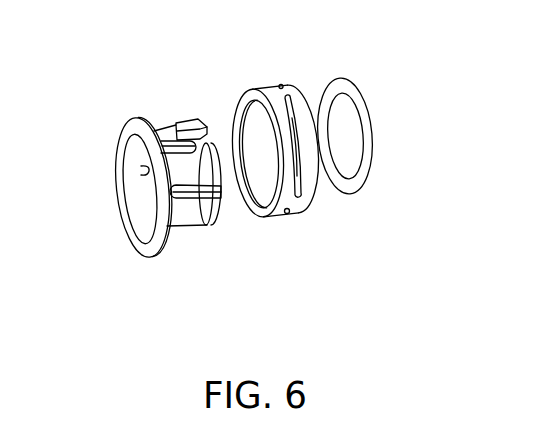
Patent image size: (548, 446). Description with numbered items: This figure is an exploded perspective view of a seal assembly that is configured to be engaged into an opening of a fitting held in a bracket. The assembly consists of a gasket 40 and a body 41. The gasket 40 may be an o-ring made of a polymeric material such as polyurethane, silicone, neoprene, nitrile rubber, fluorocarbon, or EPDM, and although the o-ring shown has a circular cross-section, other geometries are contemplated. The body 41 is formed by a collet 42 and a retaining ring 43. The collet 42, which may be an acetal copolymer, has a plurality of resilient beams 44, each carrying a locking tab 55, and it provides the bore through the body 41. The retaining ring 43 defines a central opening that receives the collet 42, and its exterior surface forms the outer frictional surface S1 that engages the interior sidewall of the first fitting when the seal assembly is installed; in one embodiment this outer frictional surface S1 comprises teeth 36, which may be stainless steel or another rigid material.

The teeth 36 is at (298, 176).
The gasket 40 is at (362, 183).
The body 41 is at (293, 41).
The collet 42 is at (124, 202).
The retaining ring 43 is at (294, 85).
The resilient beams 44 is at (180, 217).
The locking tab 55 is at (210, 222).
The outer frictional surface S1 is at (297, 208).